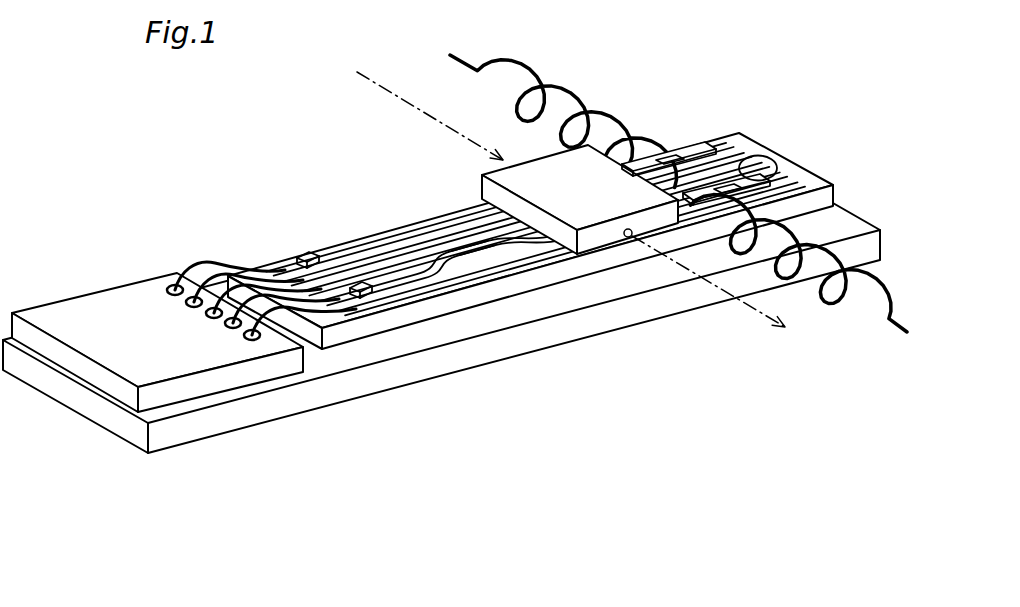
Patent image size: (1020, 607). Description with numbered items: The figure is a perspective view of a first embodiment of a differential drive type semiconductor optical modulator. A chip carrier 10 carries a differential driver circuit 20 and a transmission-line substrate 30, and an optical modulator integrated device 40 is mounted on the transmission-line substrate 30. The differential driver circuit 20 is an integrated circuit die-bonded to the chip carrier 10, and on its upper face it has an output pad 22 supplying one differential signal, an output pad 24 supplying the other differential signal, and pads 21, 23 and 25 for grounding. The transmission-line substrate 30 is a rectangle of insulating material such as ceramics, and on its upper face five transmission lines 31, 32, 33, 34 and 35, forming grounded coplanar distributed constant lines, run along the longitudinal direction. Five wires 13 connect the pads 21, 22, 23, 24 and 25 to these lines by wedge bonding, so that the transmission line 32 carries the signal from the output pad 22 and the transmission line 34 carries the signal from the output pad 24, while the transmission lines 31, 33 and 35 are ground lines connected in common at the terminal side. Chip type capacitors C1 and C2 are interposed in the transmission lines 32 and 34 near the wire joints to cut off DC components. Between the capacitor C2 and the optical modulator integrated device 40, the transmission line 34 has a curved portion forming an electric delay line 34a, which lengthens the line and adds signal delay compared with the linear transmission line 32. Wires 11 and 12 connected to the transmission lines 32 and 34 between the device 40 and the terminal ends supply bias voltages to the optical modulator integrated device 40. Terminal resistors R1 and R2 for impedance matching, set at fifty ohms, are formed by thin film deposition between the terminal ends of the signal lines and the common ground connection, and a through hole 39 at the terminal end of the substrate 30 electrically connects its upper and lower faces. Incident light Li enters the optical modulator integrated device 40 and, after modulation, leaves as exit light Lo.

The chip carrier 10 is at (330, 393).
The wire 11 is at (480, 58).
The wire 12 is at (886, 324).
The wires 13 is at (212, 262).
The differential driver circuit 20 is at (72, 313).
The pad 21 is at (168, 285).
The output pad 22 is at (186, 302).
The pad 23 is at (207, 315).
The output pad 24 is at (228, 327).
The pad 25 is at (252, 340).
The transmission-line substrate 30 is at (805, 183).
The transmission line 31 is at (278, 262).
The transmission line 32 is at (380, 252).
The transmission line 33 is at (422, 262).
The transmission line 34 is at (422, 282).
The electric delay line 34a is at (470, 258).
The transmission line 35 is at (402, 302).
The through hole 39 is at (759, 164).
The optical modulator integrated device 40 is at (592, 240).
The chip type capacitor C1 is at (306, 252).
The chip type capacitor C2 is at (358, 283).
The terminal resistor R1 is at (687, 163).
The terminal resistor R2 is at (737, 183).
The incident light Li is at (410, 104).
The exit light Lo is at (724, 294).